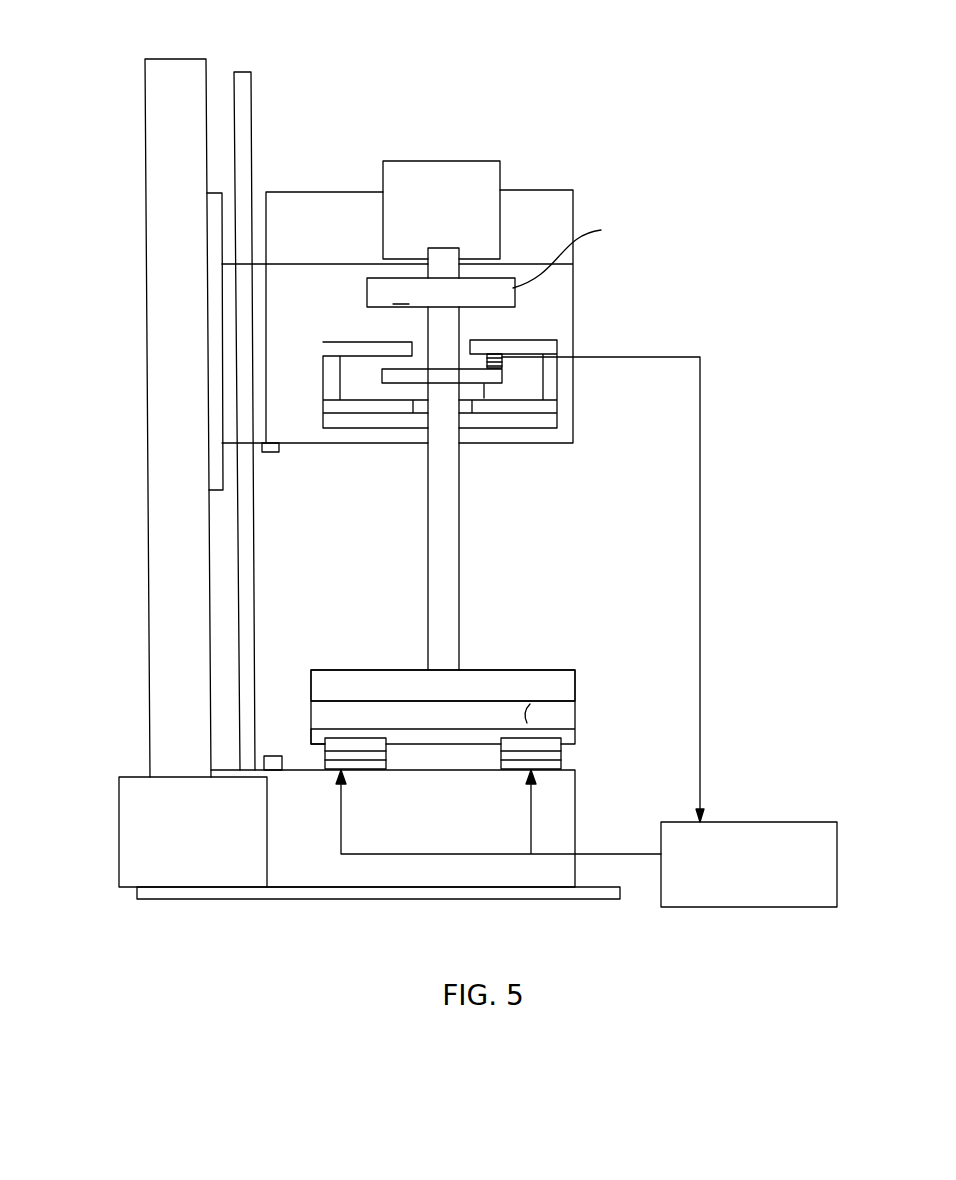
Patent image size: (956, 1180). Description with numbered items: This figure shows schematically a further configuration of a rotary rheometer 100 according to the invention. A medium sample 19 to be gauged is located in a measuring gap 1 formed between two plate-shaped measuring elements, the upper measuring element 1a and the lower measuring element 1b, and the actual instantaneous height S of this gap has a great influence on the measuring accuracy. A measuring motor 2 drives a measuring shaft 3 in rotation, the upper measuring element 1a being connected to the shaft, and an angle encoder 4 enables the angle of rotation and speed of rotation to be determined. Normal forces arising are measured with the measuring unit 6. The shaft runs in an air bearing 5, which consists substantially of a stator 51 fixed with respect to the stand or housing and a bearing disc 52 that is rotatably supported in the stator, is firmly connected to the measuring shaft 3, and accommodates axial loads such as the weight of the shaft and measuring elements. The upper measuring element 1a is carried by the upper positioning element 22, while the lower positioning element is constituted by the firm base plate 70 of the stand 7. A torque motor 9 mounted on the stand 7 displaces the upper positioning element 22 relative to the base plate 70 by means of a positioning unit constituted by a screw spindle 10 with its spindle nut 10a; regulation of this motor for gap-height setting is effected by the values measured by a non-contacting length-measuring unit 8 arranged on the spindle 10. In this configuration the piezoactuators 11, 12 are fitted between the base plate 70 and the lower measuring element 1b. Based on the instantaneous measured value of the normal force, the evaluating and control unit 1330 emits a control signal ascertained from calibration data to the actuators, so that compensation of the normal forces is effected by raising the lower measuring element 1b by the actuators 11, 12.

The rotary rheometer 100 is at (453, 92).
The stand 7 is at (157, 291).
The screw spindle 10 is at (249, 76).
The spindle nut 10a is at (237, 394).
The upper positioning element 22 is at (562, 296).
The measuring motor 2 is at (487, 178).
The measuring shaft 3 is at (438, 509).
The angle encoder 4 is at (533, 247).
The stator 51 is at (367, 352).
The measuring unit 6 is at (502, 350).
The air bearing 5 is at (534, 383).
The bearing disc 52 is at (484, 398).
The length-measuring unit 8 is at (272, 453).
The measuring gap 1 is at (475, 710).
The upper measuring element 1a is at (343, 680).
The lower measuring element 1b is at (311, 737).
The gap height S is at (527, 723).
The piezoactuator 12 is at (366, 742).
The piezoactuator 11 is at (517, 737).
The medium sample 19 is at (464, 681).
The base plate 70 is at (568, 800).
The torque motor 9 is at (143, 795).
The evaluating and control unit 1330 is at (787, 821).